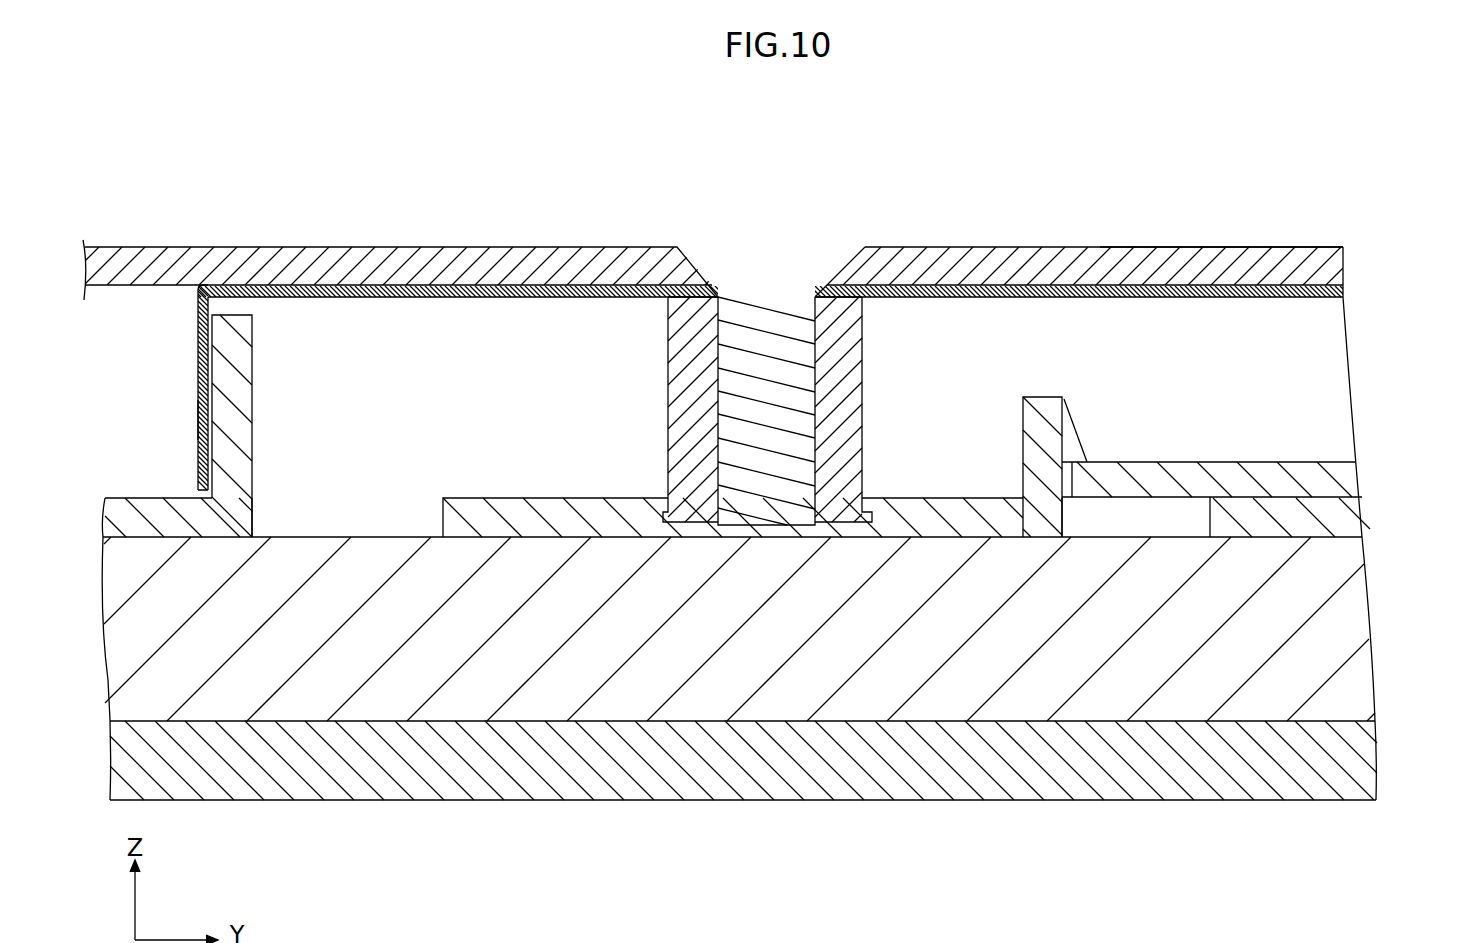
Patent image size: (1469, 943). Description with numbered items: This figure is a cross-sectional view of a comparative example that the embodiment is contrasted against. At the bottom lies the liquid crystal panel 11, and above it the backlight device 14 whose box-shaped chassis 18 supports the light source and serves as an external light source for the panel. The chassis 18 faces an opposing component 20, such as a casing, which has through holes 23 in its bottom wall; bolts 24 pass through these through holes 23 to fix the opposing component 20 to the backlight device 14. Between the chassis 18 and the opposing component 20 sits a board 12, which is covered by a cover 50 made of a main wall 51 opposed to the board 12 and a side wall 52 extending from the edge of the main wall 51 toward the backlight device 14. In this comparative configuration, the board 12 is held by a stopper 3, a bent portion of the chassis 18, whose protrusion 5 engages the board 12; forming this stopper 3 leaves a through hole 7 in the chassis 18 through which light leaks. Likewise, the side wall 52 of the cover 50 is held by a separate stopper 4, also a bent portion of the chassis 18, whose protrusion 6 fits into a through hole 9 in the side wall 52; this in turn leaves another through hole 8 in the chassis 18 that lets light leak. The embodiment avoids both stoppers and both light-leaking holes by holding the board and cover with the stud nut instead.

The opposing component 20 is at (262, 272).
The cover 50 is at (1266, 287).
The main wall 51 is at (1081, 286).
The side wall 52 is at (199, 322).
The stopper 4 is at (228, 368).
The protrusion 6 is at (198, 415).
The through hole 9 is at (200, 424).
The through hole 8 is at (252, 520).
The through holes 23 is at (838, 267).
The bolts 24 is at (747, 272).
The chassis 18 is at (1323, 515).
The stopper 3 is at (1053, 393).
The protrusion 5 is at (1072, 437).
The through hole 7 is at (1062, 523).
The board 12 is at (1270, 463).
The backlight device 14 is at (1343, 618).
The liquid crystal panel 11 is at (1177, 782).